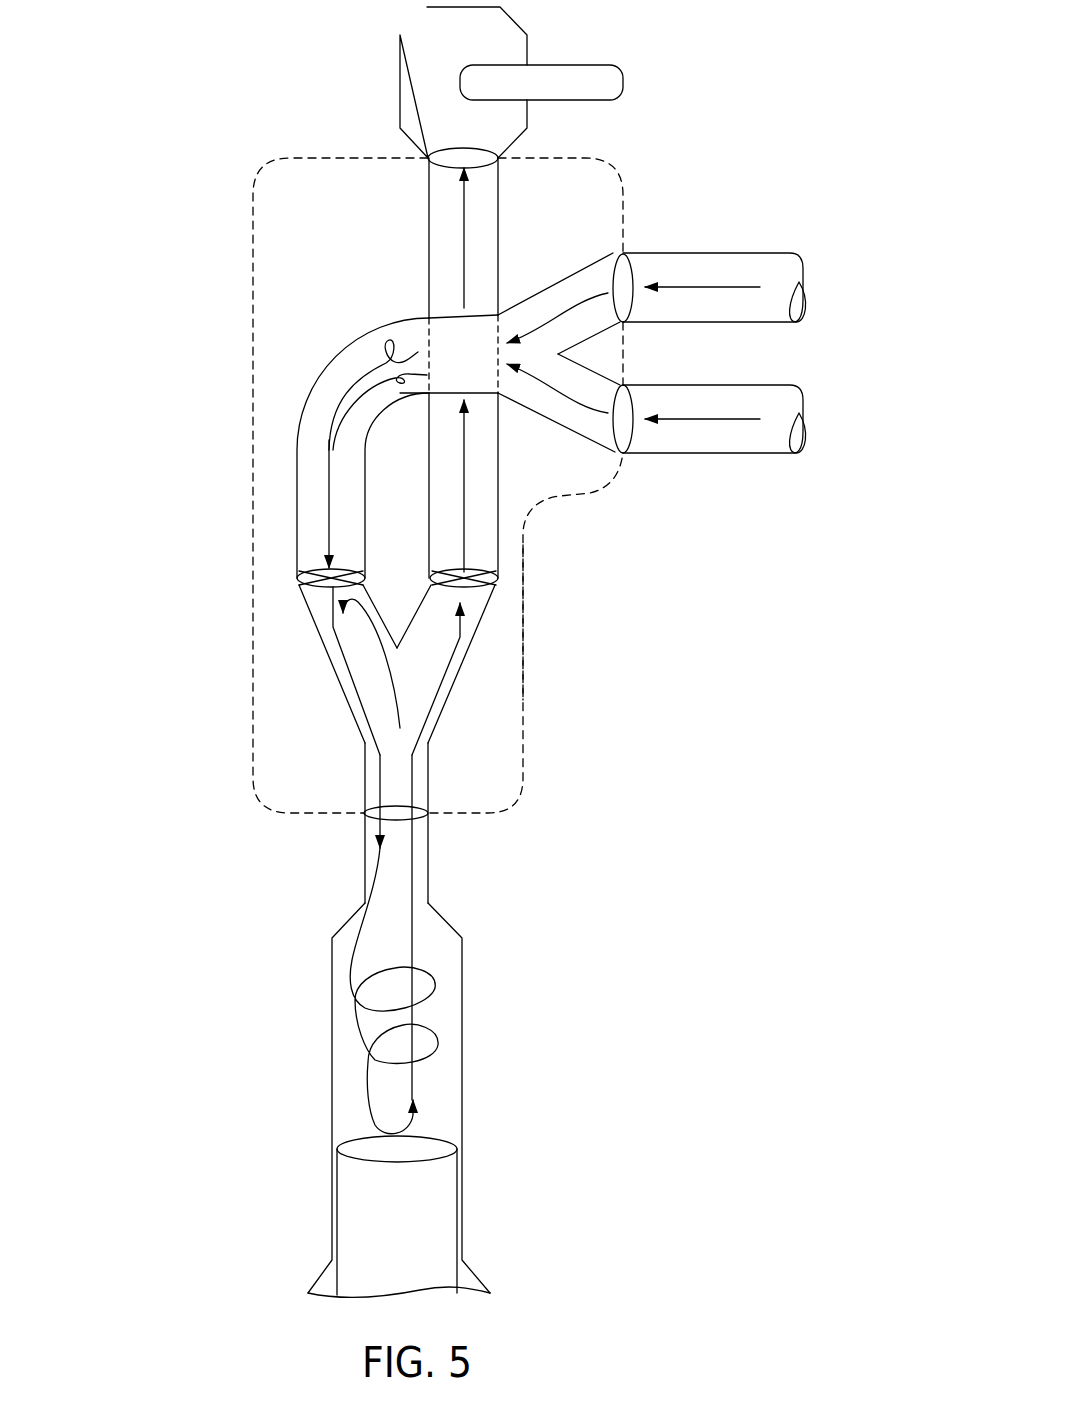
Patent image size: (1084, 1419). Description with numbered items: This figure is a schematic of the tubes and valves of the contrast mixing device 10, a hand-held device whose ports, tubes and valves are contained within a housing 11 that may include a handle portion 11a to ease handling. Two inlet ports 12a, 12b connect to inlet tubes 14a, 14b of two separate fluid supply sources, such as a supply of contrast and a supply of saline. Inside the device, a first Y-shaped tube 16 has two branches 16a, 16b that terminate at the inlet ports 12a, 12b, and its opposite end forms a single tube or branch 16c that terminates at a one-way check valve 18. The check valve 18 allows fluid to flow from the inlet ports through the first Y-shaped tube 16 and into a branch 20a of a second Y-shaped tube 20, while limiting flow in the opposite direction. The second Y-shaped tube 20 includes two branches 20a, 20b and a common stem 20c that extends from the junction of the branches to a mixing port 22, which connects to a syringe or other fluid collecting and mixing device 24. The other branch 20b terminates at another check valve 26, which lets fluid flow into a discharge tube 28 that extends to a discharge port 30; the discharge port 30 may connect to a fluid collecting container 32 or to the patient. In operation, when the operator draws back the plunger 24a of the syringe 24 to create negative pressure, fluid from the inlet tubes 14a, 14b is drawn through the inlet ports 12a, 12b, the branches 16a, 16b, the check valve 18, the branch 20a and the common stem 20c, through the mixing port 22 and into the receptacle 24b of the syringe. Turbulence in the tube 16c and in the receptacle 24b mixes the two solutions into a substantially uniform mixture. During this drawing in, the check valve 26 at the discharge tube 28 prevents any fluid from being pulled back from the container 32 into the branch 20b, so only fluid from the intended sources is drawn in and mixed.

The contrast mixing device 10 is at (246, 172).
The housing 11 is at (253, 245).
The handle portion 11a is at (524, 626).
The inlet port 12a is at (625, 305).
The inlet port 12b is at (622, 430).
The inlet tube 14a is at (720, 253).
The inlet tube 14b is at (718, 437).
The first Y-shaped tube 16 is at (407, 317).
The branch 16a is at (568, 276).
The branch 16b is at (565, 430).
The single tube or branch 16c is at (413, 336).
The check valve 18 is at (300, 578).
The second Y-shaped tube 20 is at (449, 727).
The branch 20a is at (338, 650).
The branch 20b is at (463, 640).
The common stem 20c is at (418, 770).
The mixing port 22 is at (413, 813).
The syringe 24 is at (278, 958).
The plunger 24a is at (447, 1175).
The receptacle 24b is at (447, 1008).
The check valve 26 is at (500, 579).
The discharge tube 28 is at (488, 493).
The discharge port 30 is at (477, 158).
The fluid collecting container 32 is at (398, 74).